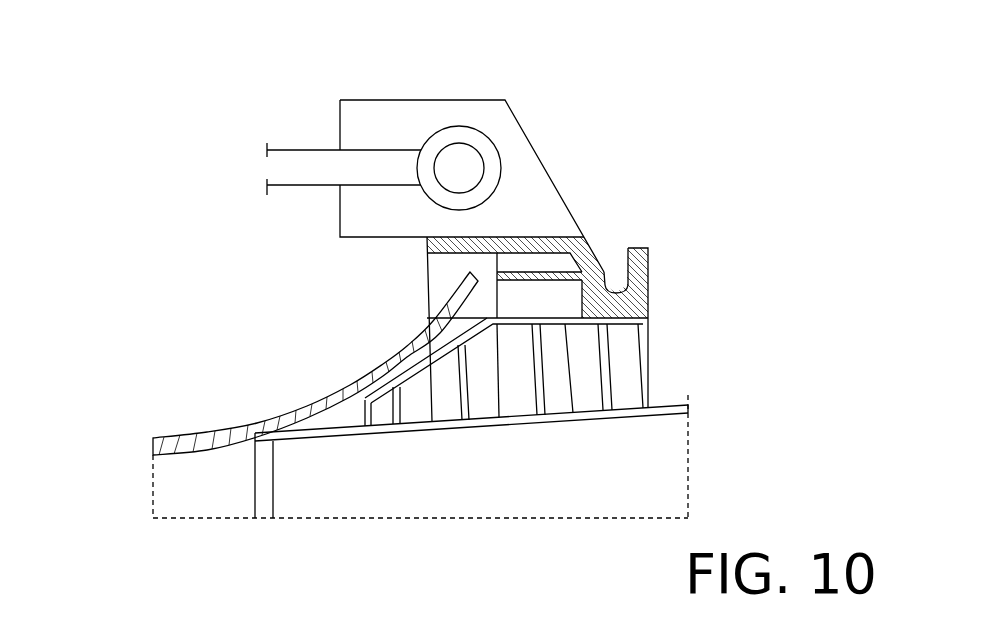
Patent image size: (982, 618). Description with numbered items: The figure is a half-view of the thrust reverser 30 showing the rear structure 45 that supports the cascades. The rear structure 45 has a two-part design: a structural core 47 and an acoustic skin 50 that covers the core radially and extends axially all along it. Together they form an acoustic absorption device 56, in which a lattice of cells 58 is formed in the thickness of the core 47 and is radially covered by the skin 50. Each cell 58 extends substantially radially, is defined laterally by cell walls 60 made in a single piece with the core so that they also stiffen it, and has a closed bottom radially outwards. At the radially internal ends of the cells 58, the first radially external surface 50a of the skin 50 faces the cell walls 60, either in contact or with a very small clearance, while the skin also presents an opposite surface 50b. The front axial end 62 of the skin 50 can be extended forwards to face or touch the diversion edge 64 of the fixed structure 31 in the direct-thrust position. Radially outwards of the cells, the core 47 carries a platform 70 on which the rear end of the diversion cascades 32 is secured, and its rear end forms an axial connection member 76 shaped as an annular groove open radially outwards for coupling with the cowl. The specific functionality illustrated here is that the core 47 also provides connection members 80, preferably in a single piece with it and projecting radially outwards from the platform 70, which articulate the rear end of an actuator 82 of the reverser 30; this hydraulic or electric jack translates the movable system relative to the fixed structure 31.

The thrust reverser 30 is at (669, 80).
The fixed structure 31 is at (151, 468).
The diversion cascades 32 is at (306, 112).
The rear structure 45 is at (754, 457).
The core 47 is at (661, 312).
The acoustic skin 50 is at (547, 425).
The first radially external surface 50a is at (668, 404).
The platform lower surface 50b is at (647, 420).
The acoustic absorption device 56 is at (484, 406).
The cells 58 is at (627, 400).
The cell walls 60 is at (494, 394).
The front axial end 62 is at (280, 446).
The diversion edge 64 is at (222, 433).
The platform 70 is at (432, 236).
The axial connection member 76 is at (615, 266).
The connection members 80 is at (503, 127).
The actuator 82 is at (275, 168).